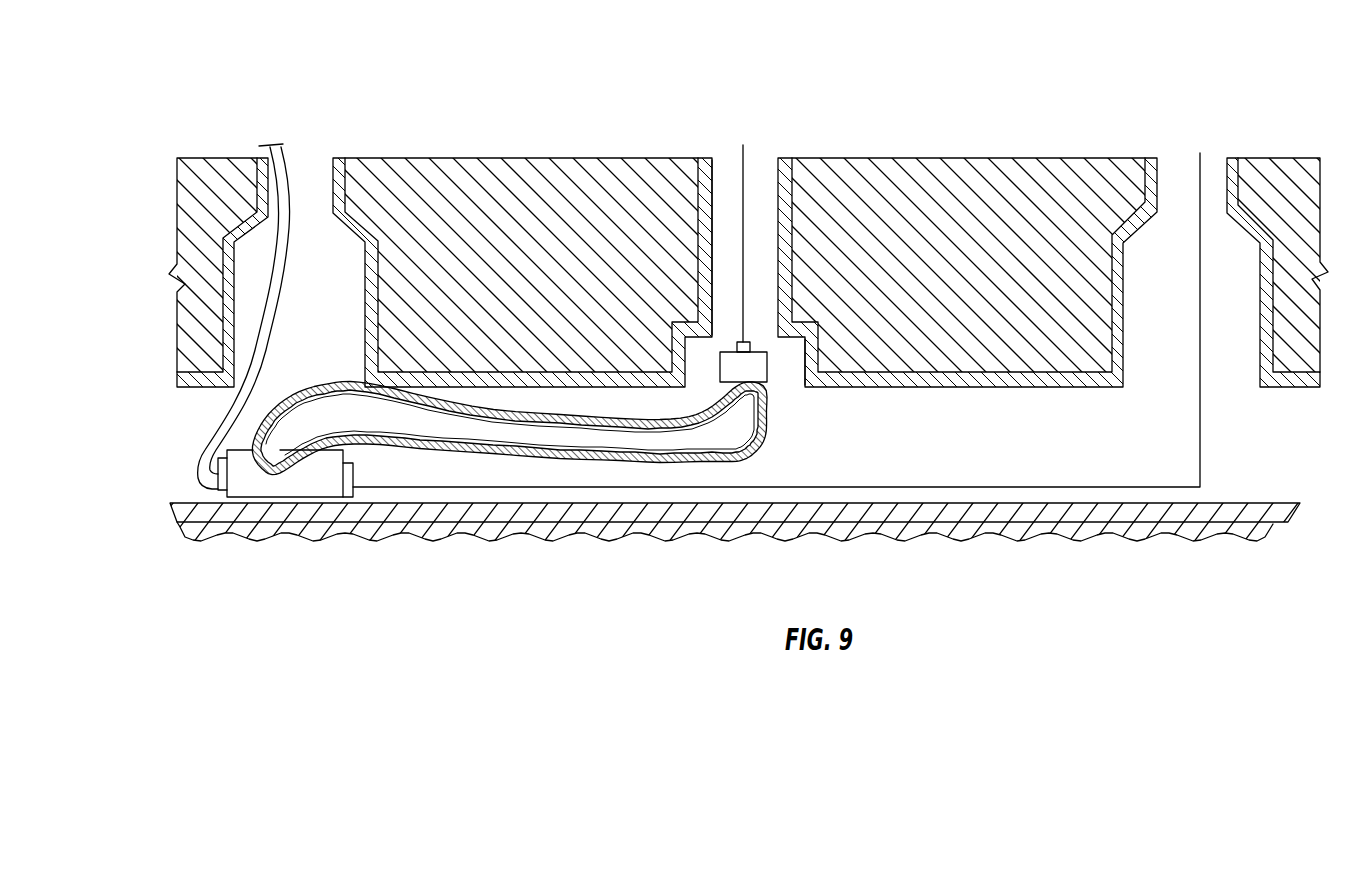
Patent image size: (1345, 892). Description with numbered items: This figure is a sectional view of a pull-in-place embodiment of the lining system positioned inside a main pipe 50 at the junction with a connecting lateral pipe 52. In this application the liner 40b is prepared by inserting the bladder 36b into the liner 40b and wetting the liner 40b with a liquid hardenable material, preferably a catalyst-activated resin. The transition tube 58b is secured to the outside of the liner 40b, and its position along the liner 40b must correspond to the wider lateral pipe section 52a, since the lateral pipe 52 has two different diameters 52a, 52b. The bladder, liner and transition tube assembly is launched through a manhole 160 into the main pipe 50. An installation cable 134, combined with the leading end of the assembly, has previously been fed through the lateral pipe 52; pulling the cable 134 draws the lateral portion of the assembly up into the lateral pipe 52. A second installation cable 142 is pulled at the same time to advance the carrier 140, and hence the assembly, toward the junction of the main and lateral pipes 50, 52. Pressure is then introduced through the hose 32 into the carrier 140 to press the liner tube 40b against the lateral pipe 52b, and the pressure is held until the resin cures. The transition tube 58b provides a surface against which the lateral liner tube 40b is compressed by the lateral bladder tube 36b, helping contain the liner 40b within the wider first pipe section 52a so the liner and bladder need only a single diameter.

The hose 32 is at (283, 167).
The manhole 160 is at (333, 183).
The lateral pipe second diameter section 52b is at (712, 185).
The installation cable 134 is at (746, 163).
The lateral pipe 52 is at (813, 258).
The wider lateral pipe section 52a is at (805, 370).
The installation cable 142 is at (1201, 164).
The carrier 140 is at (258, 428).
The transition tube 58b is at (353, 458).
The lateral bladder tube 36b is at (568, 448).
The lateral liner tube 40b is at (754, 440).
The main pipe 50 is at (928, 503).